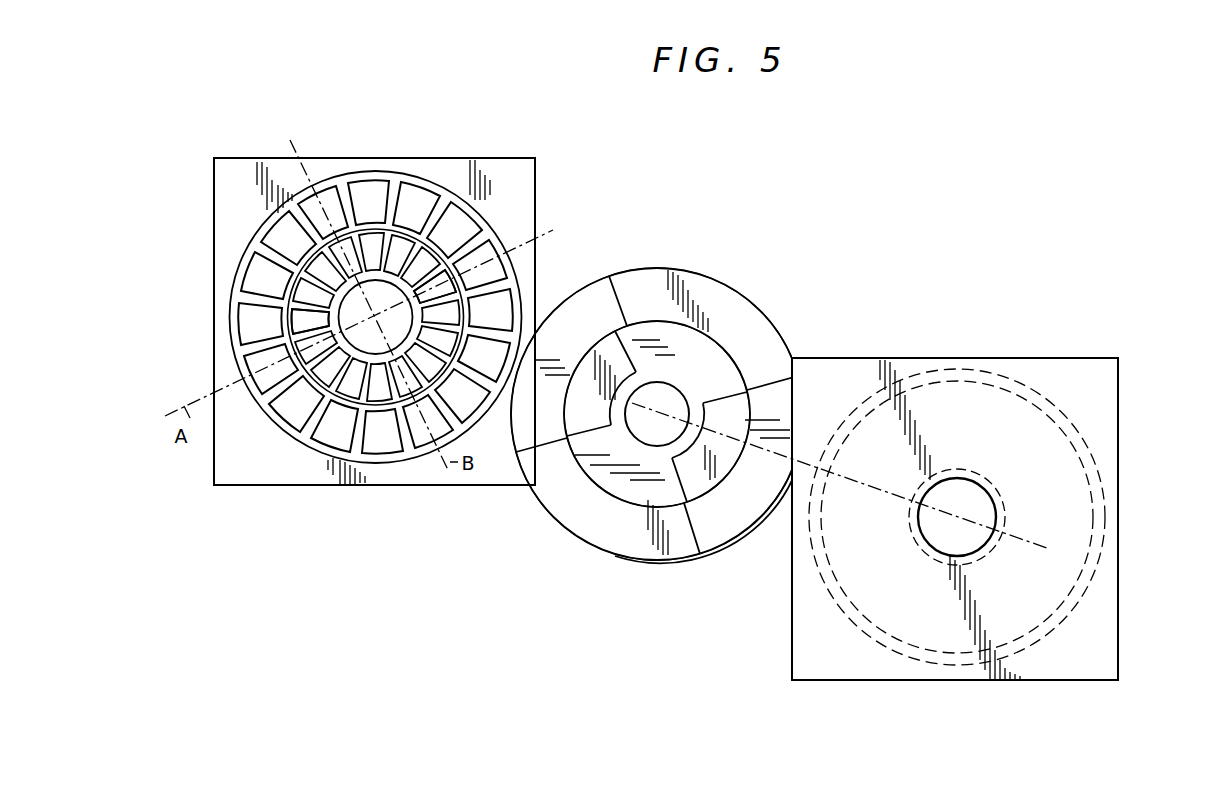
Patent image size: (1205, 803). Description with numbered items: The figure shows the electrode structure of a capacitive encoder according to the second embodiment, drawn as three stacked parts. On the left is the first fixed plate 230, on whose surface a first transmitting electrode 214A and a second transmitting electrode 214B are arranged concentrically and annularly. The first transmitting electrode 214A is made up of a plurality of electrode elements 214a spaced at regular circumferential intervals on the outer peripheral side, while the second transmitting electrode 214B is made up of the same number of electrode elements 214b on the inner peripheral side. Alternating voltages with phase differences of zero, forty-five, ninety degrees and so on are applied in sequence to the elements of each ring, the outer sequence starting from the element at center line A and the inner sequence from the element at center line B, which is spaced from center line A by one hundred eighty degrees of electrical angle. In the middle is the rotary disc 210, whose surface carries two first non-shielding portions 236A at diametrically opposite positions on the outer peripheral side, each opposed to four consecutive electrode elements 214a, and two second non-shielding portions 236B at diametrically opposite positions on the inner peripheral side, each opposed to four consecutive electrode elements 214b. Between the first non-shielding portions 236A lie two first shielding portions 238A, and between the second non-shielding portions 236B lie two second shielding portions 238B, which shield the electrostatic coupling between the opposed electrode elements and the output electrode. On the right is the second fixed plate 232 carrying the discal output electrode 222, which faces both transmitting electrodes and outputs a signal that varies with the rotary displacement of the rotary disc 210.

The rotary disc 210 is at (782, 352).
The first transmitting electrode 214A is at (333, 176).
The second transmitting electrode 214B is at (325, 393).
The electrode element 214a is at (414, 300).
The electrode element 214b is at (290, 320).
The output electrode 222 is at (1072, 533).
The first fixed plate 230 is at (536, 184).
The second fixed plate 232 is at (980, 358).
The first non-shielding portion 236A is at (703, 295).
The second non-shielding portion 236B is at (585, 415).
The first shielding portion 238A is at (573, 327).
The second shielding portion 238B is at (700, 350).